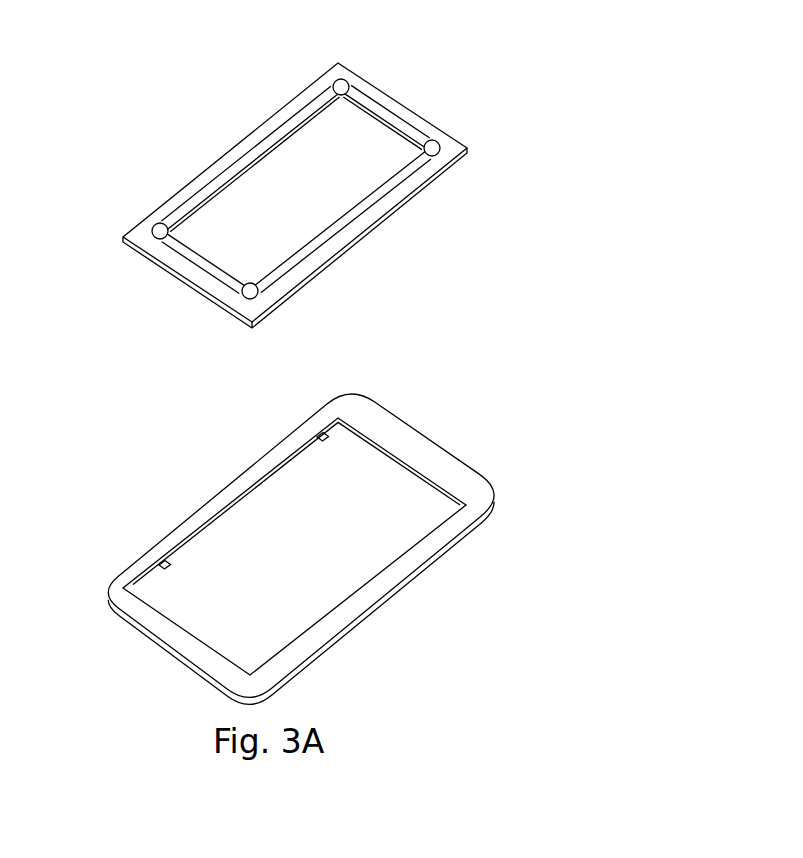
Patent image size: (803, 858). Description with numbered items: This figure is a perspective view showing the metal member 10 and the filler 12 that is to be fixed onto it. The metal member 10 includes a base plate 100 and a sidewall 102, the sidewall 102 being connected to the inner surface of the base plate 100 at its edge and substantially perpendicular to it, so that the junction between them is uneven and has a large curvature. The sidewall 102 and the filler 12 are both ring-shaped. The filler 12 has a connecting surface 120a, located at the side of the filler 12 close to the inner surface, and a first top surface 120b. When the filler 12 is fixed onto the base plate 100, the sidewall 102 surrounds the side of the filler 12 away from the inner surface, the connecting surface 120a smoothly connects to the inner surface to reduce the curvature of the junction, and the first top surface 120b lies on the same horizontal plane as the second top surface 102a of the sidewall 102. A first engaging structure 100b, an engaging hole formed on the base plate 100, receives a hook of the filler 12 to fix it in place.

The metal member 10 is at (253, 529).
The base plate 100 is at (242, 521).
The first engaging structure 100b is at (318, 440).
The sidewall 102 is at (301, 529).
The second top surface 102a is at (411, 447).
The filler 12 is at (295, 168).
The connecting surface 120a is at (282, 132).
The first top surface 120b is at (193, 185).